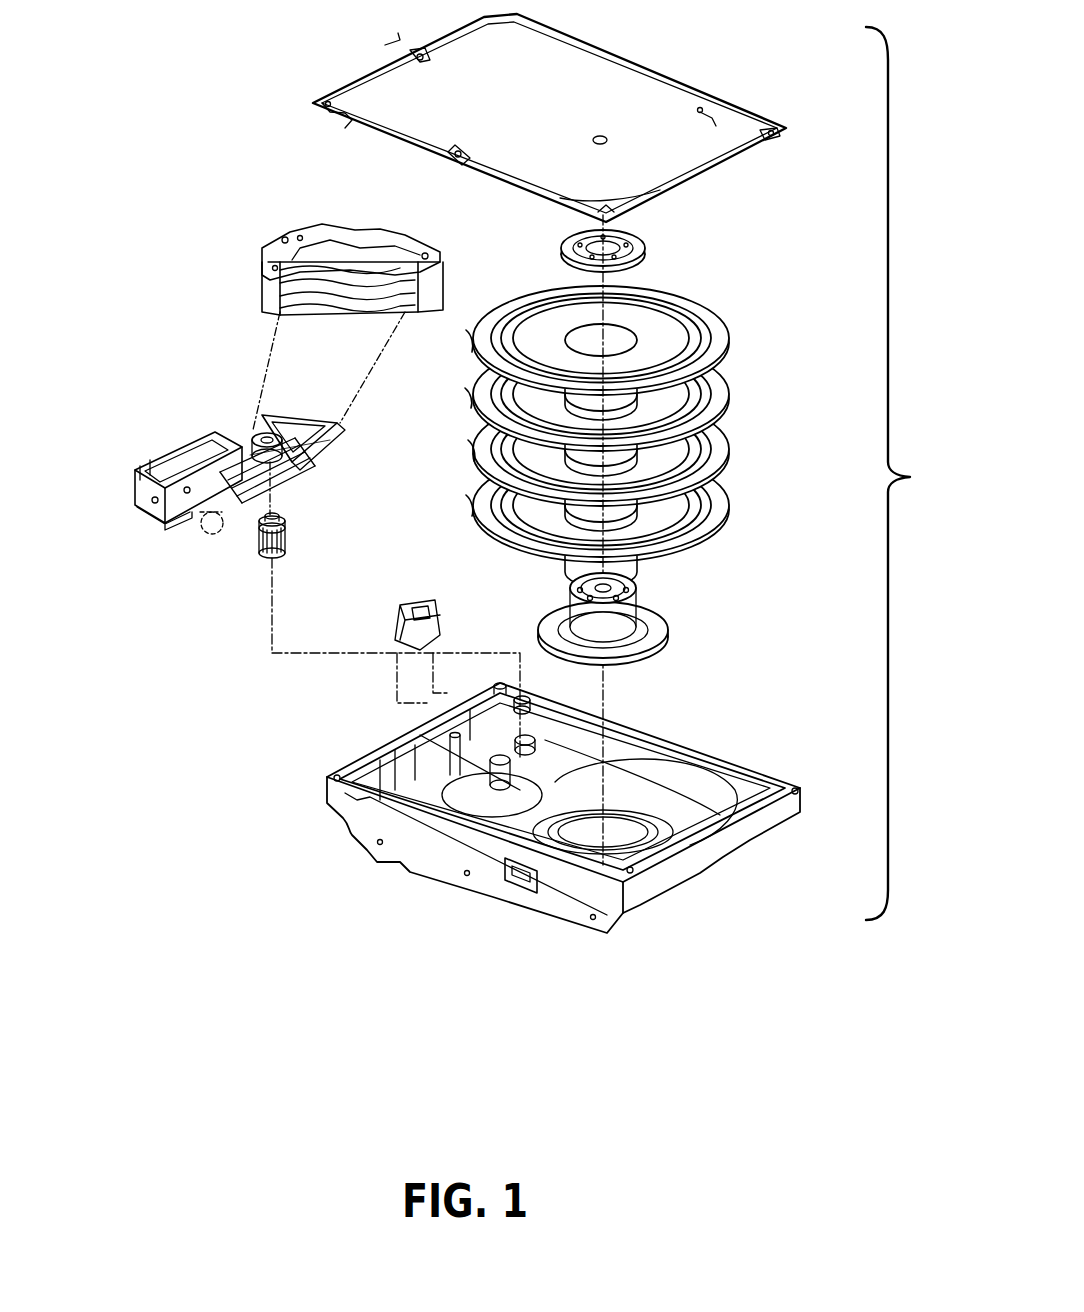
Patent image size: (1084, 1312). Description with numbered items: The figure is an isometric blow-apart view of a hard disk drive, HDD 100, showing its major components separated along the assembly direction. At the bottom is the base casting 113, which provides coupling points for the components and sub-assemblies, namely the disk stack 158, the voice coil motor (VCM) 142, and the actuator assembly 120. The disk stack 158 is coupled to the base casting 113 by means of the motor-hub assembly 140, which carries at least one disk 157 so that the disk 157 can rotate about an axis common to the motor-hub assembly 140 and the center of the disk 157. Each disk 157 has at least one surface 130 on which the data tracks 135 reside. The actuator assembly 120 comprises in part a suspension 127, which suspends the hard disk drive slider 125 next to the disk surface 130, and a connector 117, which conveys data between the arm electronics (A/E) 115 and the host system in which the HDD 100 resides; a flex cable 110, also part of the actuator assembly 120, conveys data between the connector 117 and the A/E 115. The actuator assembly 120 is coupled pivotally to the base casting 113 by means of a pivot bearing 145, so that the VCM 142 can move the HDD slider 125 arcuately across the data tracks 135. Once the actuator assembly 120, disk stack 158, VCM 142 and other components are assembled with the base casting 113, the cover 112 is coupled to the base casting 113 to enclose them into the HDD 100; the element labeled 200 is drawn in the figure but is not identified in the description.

The HDD 100 is at (914, 473).
The cover 112 is at (630, 103).
The base casting 113 is at (345, 805).
The surface 130 is at (724, 541).
The data tracks 135 is at (530, 306).
The motor-hub assembly 140 is at (640, 647).
The voice coil motor (VCM) 142 is at (262, 422).
The pivot bearing 145 is at (263, 556).
The disk 157 is at (472, 340).
The disk stack 158 is at (790, 298).
The actuator assembly 120 is at (197, 436).
The flex cable 110 is at (240, 440).
The arm electronics (A/E) 115 is at (250, 433).
The connector 117 is at (173, 490).
The hard disk drive slider 125 is at (205, 528).
The suspension 127 is at (233, 510).
The damper 200 is at (200, 533).